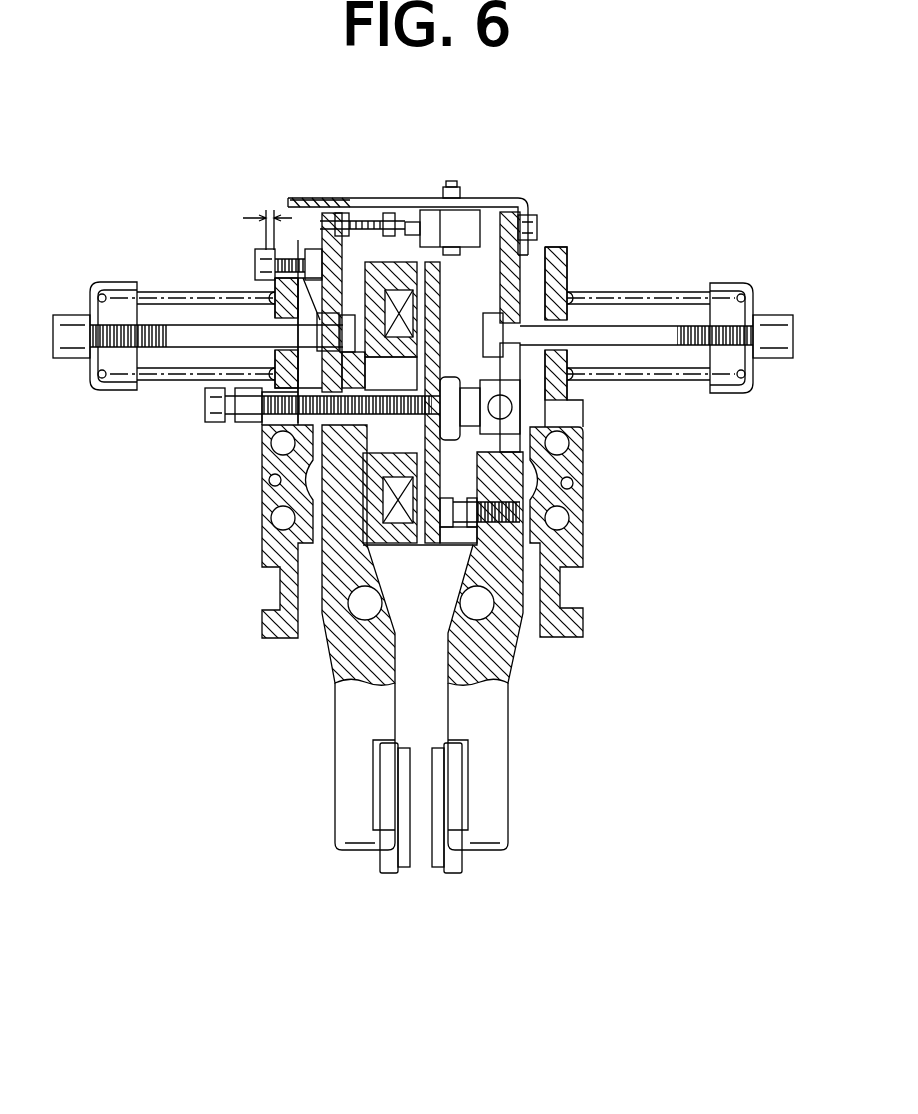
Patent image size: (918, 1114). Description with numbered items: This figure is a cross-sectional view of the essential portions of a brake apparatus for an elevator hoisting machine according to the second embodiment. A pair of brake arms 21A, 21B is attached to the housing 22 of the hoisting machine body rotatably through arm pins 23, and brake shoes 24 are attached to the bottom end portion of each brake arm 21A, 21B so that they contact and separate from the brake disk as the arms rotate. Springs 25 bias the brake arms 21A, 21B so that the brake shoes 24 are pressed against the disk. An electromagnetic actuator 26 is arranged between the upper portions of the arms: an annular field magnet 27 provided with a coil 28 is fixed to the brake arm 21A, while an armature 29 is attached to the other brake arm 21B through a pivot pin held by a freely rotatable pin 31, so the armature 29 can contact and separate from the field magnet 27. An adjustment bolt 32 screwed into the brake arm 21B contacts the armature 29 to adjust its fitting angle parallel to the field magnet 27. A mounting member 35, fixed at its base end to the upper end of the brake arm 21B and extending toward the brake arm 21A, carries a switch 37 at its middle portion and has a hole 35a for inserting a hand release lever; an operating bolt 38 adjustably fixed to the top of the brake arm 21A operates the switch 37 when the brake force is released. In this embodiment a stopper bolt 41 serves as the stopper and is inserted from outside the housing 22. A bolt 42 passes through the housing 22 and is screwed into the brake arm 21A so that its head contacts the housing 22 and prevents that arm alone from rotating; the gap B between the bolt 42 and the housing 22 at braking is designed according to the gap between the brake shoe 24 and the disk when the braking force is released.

The brake arm 21A is at (355, 720).
The brake arm 21B is at (490, 722).
The housing 22 is at (580, 557).
The arm pin 23 is at (480, 607).
The brake shoe 24 is at (450, 876).
The spring 25 is at (195, 292).
The electromagnetic actuator 26 is at (356, 268).
The field magnet 27 is at (300, 562).
The coil 28 is at (403, 542).
The armature 29 is at (440, 272).
The pin 31 is at (512, 405).
The adjustment bolt 32 is at (457, 502).
The mounting member 35 is at (511, 198).
The hole 35a is at (345, 198).
The switch 37 is at (412, 222).
The operating bolt 38 is at (368, 222).
The stopper bolt 41 is at (228, 425).
The bolt 42 is at (255, 262).
The gap B is at (267, 217).